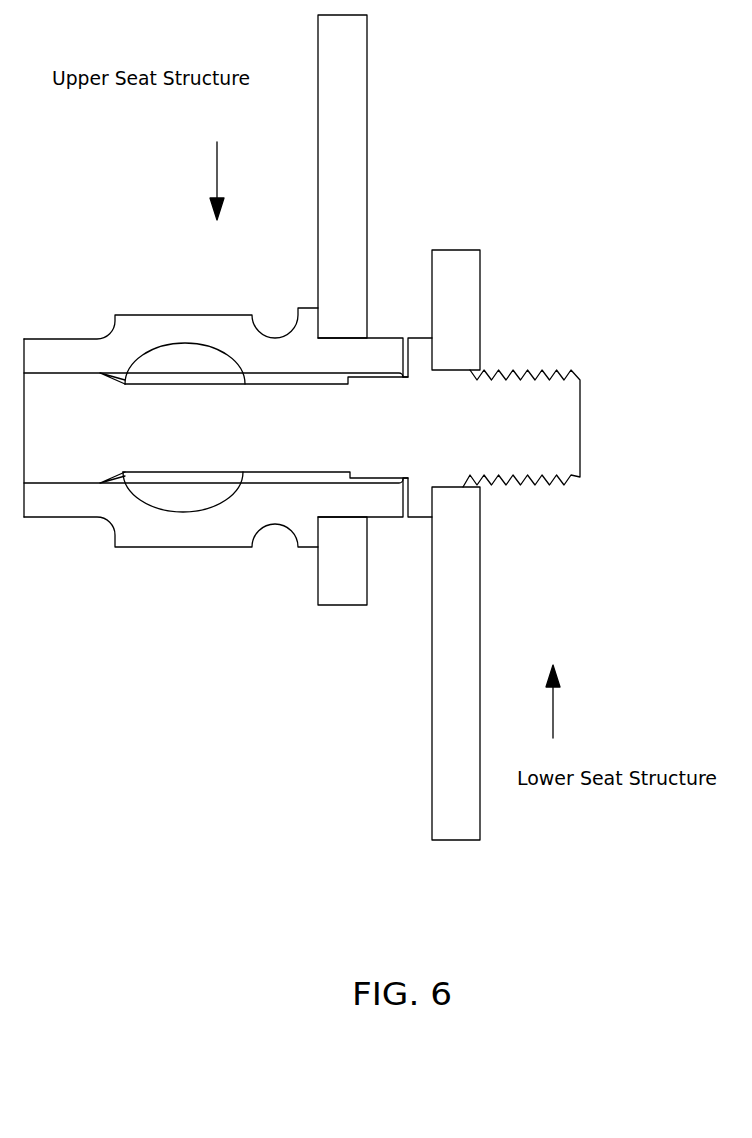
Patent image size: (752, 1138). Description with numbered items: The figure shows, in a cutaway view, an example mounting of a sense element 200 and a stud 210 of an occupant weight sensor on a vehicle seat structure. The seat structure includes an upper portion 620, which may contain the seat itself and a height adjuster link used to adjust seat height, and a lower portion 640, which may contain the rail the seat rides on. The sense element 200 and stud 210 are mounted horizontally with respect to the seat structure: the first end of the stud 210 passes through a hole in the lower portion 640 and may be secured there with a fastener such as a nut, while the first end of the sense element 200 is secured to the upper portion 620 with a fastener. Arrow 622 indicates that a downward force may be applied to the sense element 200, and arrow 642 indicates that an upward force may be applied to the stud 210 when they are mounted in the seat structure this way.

The sense element 200 is at (297, 342).
The stud 210 is at (262, 437).
The upper portion 620 is at (367, 112).
The arrow 622 is at (216, 175).
The lower portion 640 is at (480, 594).
The arrow 642 is at (553, 696).